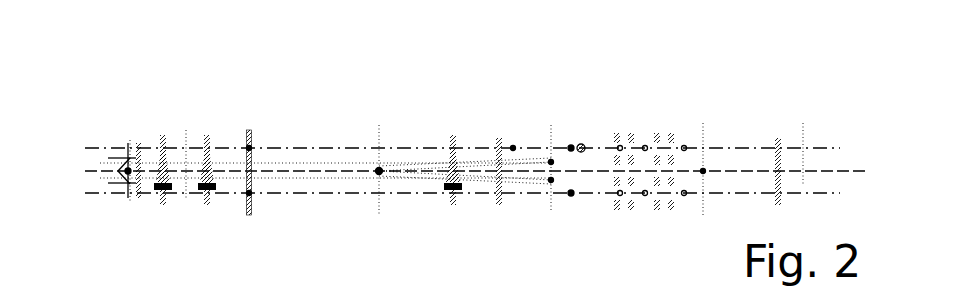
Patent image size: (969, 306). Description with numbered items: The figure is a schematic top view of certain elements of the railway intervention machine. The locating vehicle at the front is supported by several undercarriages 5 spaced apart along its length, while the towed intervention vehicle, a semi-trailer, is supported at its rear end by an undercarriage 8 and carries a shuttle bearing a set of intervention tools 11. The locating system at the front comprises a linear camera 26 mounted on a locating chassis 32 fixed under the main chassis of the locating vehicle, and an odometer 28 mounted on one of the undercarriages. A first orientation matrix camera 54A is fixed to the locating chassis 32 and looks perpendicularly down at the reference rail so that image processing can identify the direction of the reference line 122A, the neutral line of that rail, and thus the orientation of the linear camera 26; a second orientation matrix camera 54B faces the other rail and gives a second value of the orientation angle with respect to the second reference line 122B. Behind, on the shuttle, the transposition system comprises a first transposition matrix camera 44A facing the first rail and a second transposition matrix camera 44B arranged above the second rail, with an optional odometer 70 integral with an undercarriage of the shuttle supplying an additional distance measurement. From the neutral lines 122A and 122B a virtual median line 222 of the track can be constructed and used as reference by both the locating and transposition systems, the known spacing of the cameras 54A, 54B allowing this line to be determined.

The undercarriages 5 is at (220, 131).
The undercarriage 8 is at (777, 140).
The intervention tools 11 is at (680, 215).
The linear camera 26 is at (250, 131).
The odometer 28 is at (512, 146).
The locating chassis 32 is at (246, 150).
The first transposition matrix camera 44A is at (571, 146).
The second transposition matrix camera 44B is at (571, 196).
The first orientation matrix camera 54A is at (252, 148).
The second orientation matrix camera 54B is at (252, 194).
The odometer 70 is at (587, 146).
The reference line 122A is at (395, 148).
The reference line 122B is at (403, 194).
The median line 222 is at (826, 170).